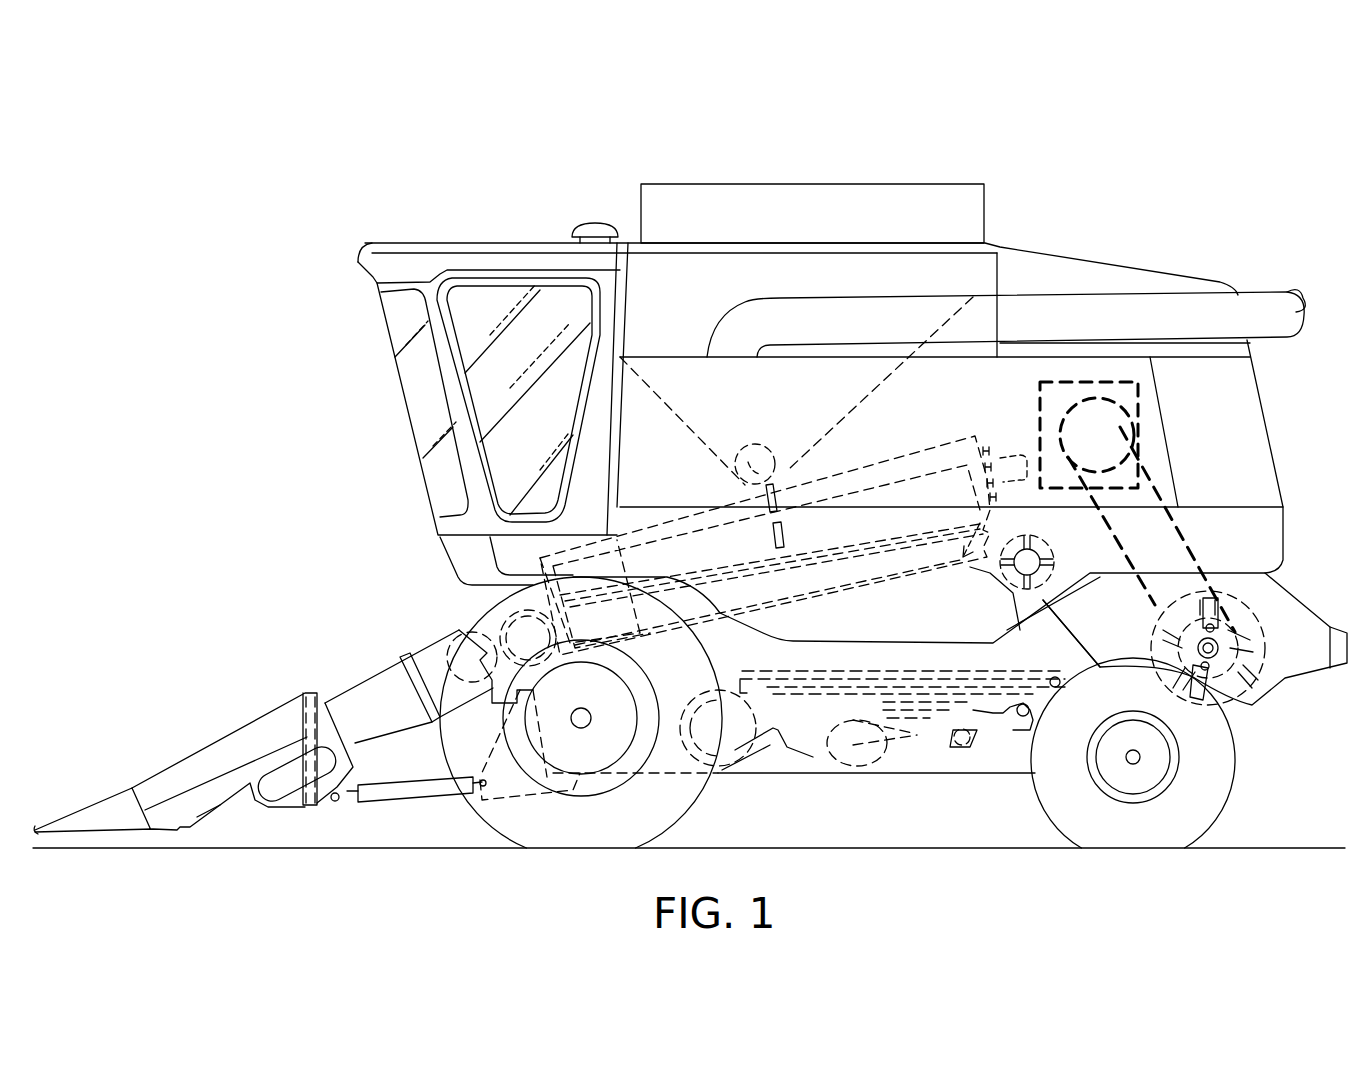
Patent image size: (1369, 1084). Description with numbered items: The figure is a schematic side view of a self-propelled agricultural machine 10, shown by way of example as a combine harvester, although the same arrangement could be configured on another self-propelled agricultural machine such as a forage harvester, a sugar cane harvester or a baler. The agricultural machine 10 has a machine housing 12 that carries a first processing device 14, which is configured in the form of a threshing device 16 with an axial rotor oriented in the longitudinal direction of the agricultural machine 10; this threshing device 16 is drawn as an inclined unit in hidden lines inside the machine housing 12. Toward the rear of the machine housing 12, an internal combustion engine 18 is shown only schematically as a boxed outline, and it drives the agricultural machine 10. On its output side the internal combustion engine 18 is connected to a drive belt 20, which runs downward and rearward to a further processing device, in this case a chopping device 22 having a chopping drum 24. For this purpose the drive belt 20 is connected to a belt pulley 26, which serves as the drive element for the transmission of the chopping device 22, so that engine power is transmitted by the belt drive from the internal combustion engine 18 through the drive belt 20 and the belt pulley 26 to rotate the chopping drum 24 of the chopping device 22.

The agricultural machine 10 is at (1107, 127).
The machine housing 12 is at (964, 610).
The first processing device 14 is at (843, 533).
The threshing device 16 is at (803, 530).
The internal combustion engine 18 is at (1110, 393).
The drive belt 20 is at (1200, 533).
The chopping device 22 is at (1245, 620).
The chopping drum 24 is at (1250, 700).
The belt pulley 26 is at (1245, 675).